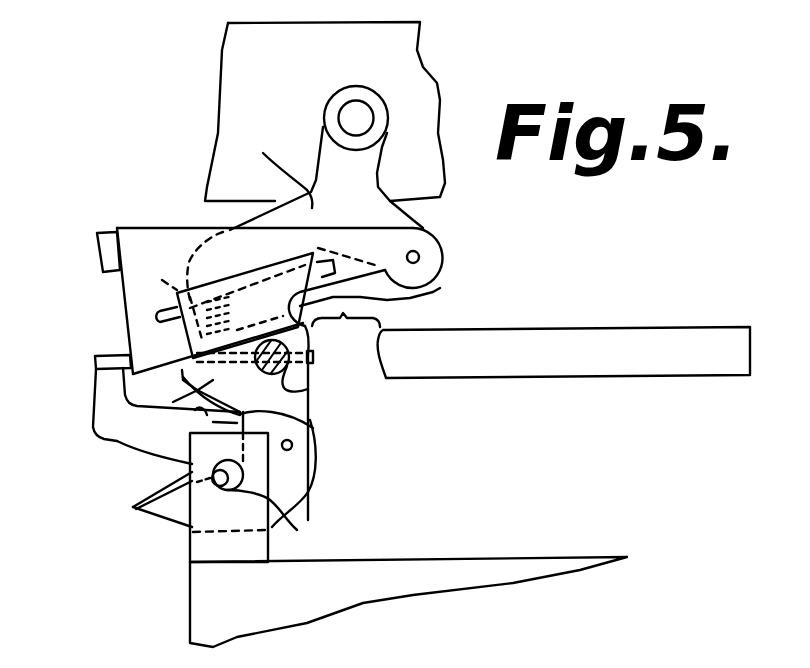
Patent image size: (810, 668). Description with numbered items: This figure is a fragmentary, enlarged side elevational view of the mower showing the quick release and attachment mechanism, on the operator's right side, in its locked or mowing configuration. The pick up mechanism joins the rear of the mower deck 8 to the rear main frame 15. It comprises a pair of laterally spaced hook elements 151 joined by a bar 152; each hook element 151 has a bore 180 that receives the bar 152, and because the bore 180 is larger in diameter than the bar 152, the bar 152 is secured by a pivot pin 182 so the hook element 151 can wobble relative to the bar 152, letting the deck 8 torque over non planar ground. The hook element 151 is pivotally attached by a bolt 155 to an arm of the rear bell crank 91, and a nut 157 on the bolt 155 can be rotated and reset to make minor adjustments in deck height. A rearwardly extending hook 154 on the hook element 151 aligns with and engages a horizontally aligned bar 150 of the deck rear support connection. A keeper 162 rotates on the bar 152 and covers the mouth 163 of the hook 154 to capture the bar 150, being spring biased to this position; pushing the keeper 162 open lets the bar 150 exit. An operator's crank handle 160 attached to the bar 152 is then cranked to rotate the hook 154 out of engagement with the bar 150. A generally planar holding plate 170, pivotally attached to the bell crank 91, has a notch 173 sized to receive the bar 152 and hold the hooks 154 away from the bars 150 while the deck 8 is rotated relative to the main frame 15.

The mower deck 8 is at (472, 567).
The rear main frame 15 is at (420, 47).
The rear bell crank 91 is at (277, 165).
The bar 150 is at (270, 530).
The hook element 151 is at (93, 428).
The bar 152 is at (308, 392).
The hook 154 is at (172, 517).
The bolt 155 is at (217, 297).
The nut 157 is at (187, 338).
The operator's crank handle 160 is at (577, 328).
The keeper 162 is at (115, 443).
The mouth 163 is at (310, 417).
The holding plate 170 is at (128, 240).
The notch 173 is at (440, 288).
The bore 180 is at (308, 368).
The pivot pin 182 is at (310, 351).